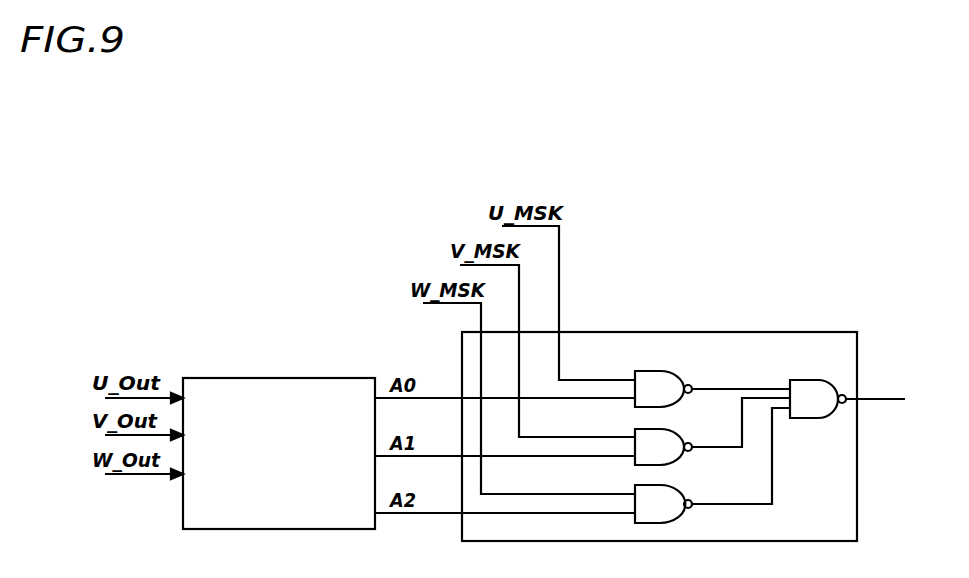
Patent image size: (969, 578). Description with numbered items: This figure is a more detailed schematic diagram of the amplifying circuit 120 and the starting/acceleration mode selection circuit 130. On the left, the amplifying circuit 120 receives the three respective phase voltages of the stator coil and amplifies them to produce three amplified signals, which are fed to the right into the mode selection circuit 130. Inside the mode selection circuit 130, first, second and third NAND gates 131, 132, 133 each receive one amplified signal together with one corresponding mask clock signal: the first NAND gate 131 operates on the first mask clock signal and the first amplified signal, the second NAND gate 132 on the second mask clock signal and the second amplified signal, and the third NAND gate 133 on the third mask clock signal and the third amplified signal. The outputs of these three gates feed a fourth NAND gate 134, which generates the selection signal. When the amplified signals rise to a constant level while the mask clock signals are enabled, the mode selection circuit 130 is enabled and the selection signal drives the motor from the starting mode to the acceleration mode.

The amplifying circuit 120 is at (280, 378).
The mode selection circuit 130 is at (647, 332).
The first NAND gate 131 is at (668, 371).
The second NAND gate 132 is at (668, 429).
The third NAND gate 133 is at (668, 485).
The fourth NAND gate 134 is at (808, 418).